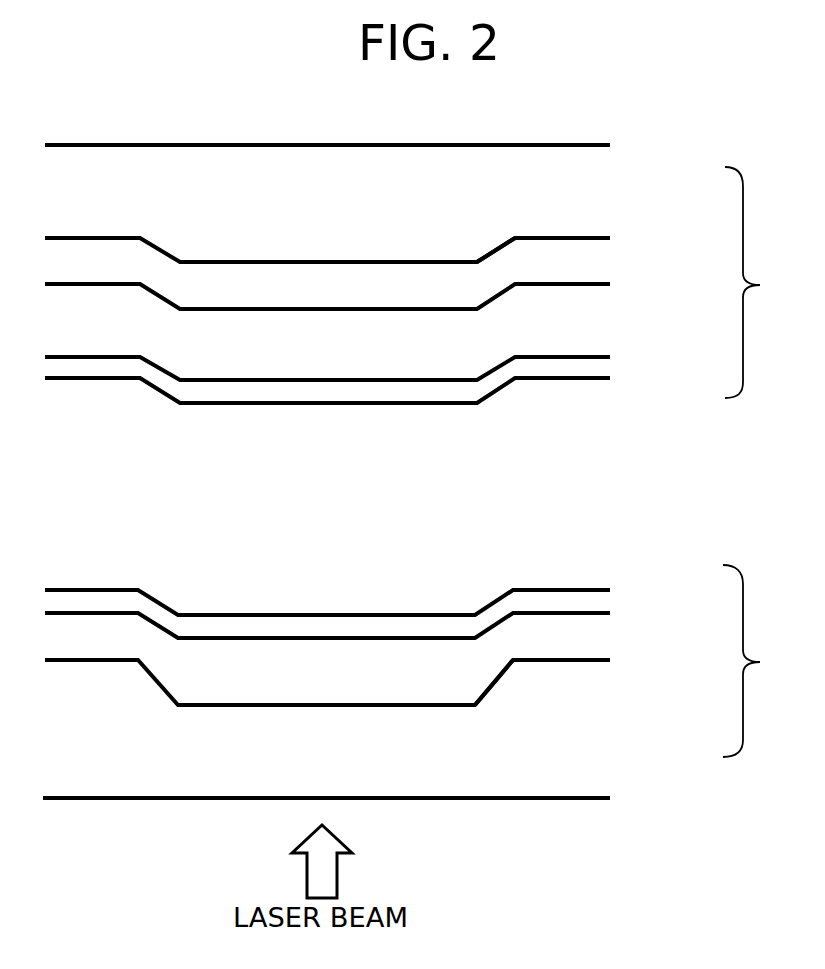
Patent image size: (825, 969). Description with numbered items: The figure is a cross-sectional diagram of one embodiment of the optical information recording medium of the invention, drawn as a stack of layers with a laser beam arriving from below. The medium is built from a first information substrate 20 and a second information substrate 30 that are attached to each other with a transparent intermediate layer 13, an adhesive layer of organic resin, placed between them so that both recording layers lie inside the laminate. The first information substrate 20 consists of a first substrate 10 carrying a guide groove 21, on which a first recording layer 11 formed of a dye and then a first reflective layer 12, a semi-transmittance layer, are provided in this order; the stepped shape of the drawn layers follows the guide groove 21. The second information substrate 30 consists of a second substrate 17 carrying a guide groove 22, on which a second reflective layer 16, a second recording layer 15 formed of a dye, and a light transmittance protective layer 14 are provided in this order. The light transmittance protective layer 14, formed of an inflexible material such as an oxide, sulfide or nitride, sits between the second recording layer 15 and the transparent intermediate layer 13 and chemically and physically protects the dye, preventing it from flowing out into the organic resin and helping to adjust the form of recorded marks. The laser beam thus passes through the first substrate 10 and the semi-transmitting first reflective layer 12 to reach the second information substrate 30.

The first substrate 10 is at (595, 736).
The first recording layer 11 is at (595, 643).
The first reflective layer 12 is at (595, 605).
The transparent intermediate layer 13 is at (595, 491).
The light transmittance protective layer 14 is at (595, 374).
The second recording layer 15 is at (595, 324).
The second reflective layer 16 is at (595, 269).
The second substrate 17 is at (595, 199).
The first information substrate 20 is at (762, 661).
The guide groove 21 is at (457, 710).
The guide groove 22 is at (487, 257).
The second information substrate 30 is at (763, 282).